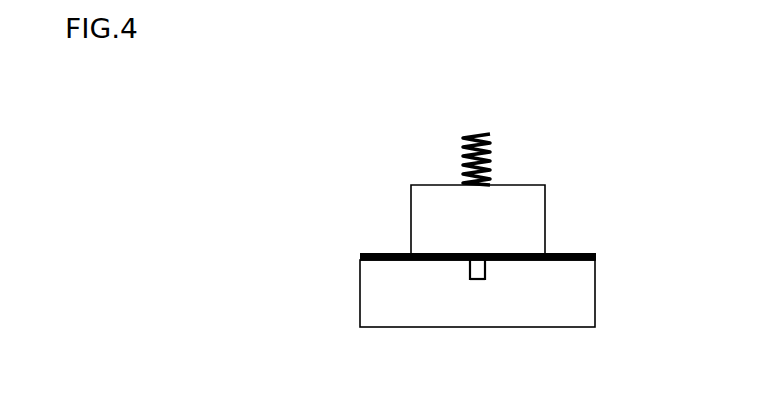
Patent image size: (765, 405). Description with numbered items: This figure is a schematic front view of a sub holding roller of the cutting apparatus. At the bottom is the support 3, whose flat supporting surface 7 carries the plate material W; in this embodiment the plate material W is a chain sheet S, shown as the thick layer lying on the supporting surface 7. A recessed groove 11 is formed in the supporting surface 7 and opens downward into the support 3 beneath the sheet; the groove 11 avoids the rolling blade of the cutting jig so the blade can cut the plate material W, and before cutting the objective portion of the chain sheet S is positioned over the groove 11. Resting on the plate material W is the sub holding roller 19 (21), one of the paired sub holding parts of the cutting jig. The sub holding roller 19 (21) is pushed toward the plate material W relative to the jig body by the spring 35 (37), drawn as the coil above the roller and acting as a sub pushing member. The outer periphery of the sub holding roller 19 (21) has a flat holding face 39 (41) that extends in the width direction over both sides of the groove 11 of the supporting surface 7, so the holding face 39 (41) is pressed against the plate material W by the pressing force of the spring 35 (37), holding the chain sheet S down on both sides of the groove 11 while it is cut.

The support 3 is at (578, 283).
The supporting surface 7 is at (375, 262).
The groove 11 is at (473, 282).
The sub holding roller 19 is at (519, 194).
The sub holding roller 21 is at (533, 184).
The spring 35 is at (506, 132).
The spring 37 is at (483, 133).
The holding face 39 is at (522, 289).
The holding face 41 is at (477, 269).
The plate material W is at (500, 223).
The chain sheet S is at (588, 252).